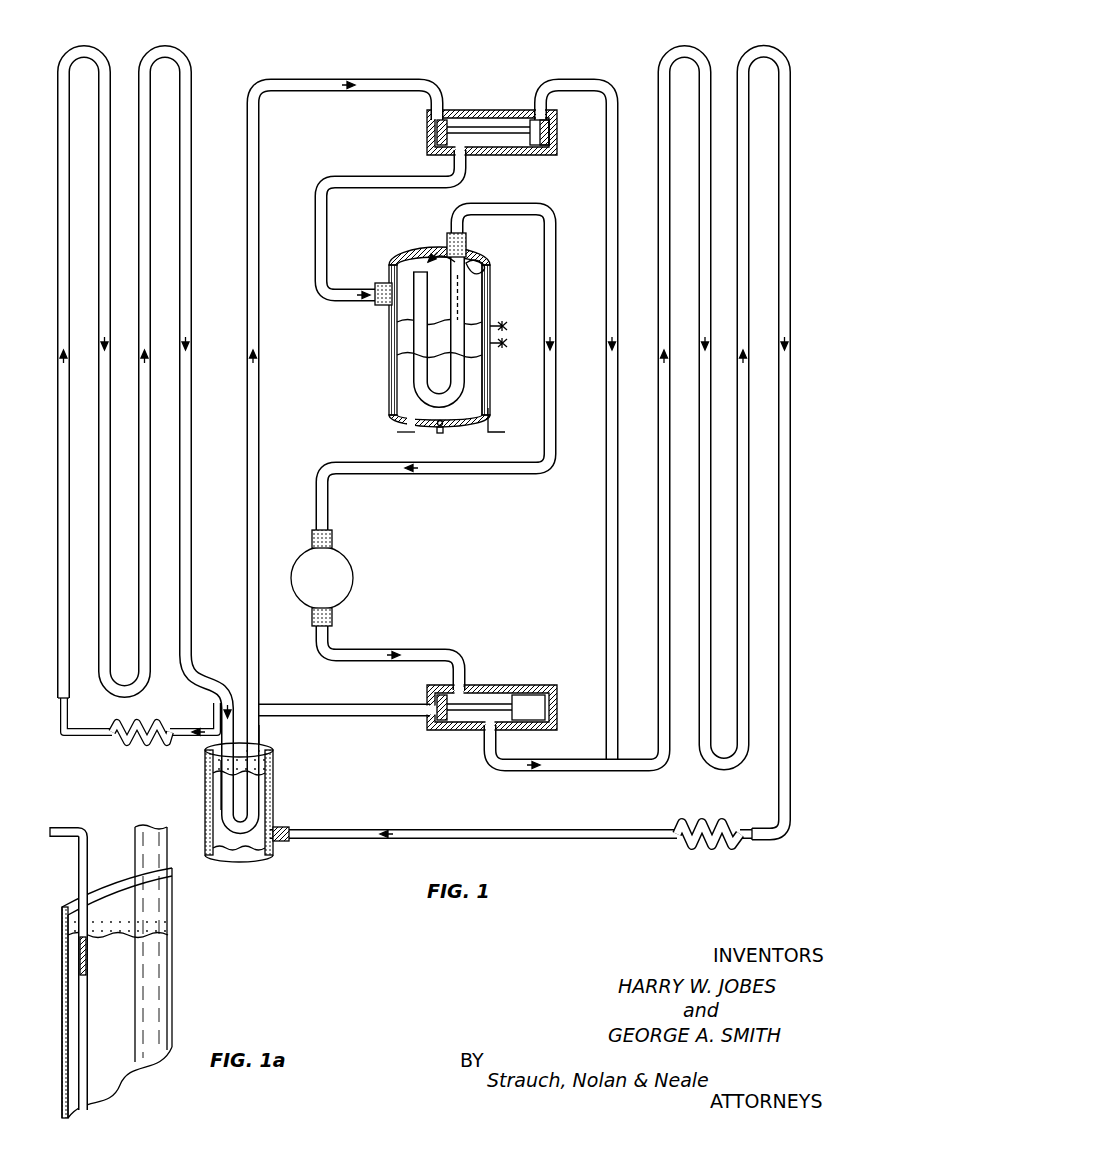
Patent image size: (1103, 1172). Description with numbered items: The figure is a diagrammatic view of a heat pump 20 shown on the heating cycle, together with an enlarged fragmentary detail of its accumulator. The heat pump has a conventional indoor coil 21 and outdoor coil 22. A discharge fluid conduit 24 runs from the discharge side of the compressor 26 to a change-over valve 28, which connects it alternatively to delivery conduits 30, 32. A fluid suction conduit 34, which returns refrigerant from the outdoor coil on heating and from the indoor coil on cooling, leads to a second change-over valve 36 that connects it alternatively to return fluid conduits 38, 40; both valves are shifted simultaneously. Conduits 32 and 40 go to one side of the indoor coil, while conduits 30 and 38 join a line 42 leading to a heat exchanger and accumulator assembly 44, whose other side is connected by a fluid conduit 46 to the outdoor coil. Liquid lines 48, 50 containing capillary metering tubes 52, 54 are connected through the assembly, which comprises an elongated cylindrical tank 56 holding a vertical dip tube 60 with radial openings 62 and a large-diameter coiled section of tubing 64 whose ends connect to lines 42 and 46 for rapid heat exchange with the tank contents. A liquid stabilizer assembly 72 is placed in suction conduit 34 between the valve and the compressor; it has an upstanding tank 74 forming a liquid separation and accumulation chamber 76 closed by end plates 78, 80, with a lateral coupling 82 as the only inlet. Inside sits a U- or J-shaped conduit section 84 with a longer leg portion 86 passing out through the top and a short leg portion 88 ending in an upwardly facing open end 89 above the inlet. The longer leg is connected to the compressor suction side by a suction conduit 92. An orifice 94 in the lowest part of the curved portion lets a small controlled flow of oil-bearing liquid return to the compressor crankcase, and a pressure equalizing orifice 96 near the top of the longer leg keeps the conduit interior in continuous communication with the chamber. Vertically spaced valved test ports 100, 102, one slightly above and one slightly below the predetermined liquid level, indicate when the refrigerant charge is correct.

In FIG. 1, the heat pump 20 is at (470, 44).
In FIG. 1, the indoor coil 21 is at (683, 45).
In FIG. 1, the outdoor coil 22 is at (184, 46).
In FIG. 1, the discharge fluid conduit 24 is at (428, 652).
In FIG. 1, the compressor 26 is at (355, 568).
In FIG. 1, the change-over valve 28 is at (533, 685).
In FIG. 1, the delivery conduit 30 is at (392, 720).
In FIG. 1, the delivery conduit 32 is at (533, 775).
In FIG. 1, the fluid suction conduit 34 is at (328, 240).
In FIG. 1, the change-over valve 36 is at (552, 135).
In FIG. 1, the return fluid conduit 38 is at (371, 90).
In FIG. 1, the return fluid conduit 40 is at (583, 78).
In FIG. 1, the line 42 is at (262, 735).
In FIG. 1, the heat exchanger and accumulator assembly 44 is at (285, 797).
In FIG. 1a, the heat exchanger and accumulator assembly 44 is at (52, 895).
In FIG. 1, the fluid conduit 46 is at (207, 690).
In FIG. 1, the liquid line 48 is at (212, 723).
In FIG. 1a, the liquid line 48 is at (66, 828).
In FIG. 1, the liquid line 50 is at (590, 842).
In FIG. 1, the capillary metering tube 52 is at (137, 744).
In FIG. 1, the capillary metering tube 54 is at (712, 846).
In FIG. 1, the tank 56 is at (277, 823).
In FIG. 1a, the tank 56 is at (62, 1000).
In FIG. 1, the dip tube 60 is at (212, 817).
In FIG. 1a, the dip tube 60 is at (86, 1030).
In FIG. 1a, the radial openings 62 is at (86, 962).
In FIG. 1, the coiled section of tubing 64 is at (242, 840).
In FIG. 1a, the coiled section of tubing 64 is at (150, 992).
In FIG. 1, the liquid stabilizer assembly 72 is at (378, 406).
In FIG. 1, the tank 74 is at (490, 298).
In FIG. 1, the liquid separation and accumulation chamber 76 is at (470, 320).
In FIG. 1, the end plate 78 is at (419, 262).
In FIG. 1, the end plate 80 is at (480, 430).
In FIG. 1, the coupling 82 is at (384, 283).
In FIG. 1, the U- or J-shaped conduit section 84 is at (472, 388).
In FIG. 1, the longer leg portion 86 is at (467, 248).
In FIG. 1, the short leg portion 88 is at (415, 320).
In FIG. 1, the open end 89 is at (430, 262).
In FIG. 1, the suction conduit 92 is at (520, 205).
In FIG. 1, the orifice 94 is at (438, 428).
In FIG. 1, the pressure equalizing orifice 96 is at (472, 265).
In FIG. 1, the valved test port 100 is at (506, 328).
In FIG. 1, the valved test port 102 is at (506, 345).